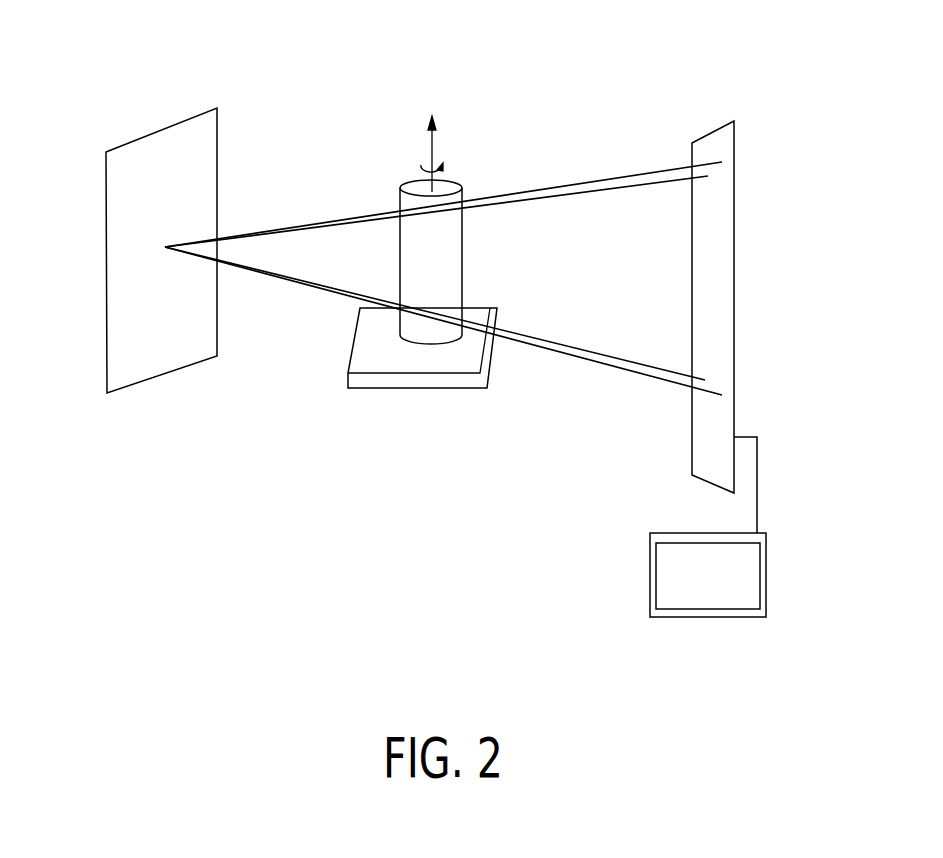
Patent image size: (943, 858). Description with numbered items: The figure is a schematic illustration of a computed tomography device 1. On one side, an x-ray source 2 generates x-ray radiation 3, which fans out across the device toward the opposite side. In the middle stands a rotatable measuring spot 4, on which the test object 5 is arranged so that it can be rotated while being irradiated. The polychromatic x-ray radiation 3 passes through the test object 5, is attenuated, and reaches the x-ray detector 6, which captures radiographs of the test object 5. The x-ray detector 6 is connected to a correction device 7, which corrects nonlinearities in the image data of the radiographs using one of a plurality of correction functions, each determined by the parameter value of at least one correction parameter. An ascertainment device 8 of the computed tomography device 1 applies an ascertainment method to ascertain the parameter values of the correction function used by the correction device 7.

The computed tomography device 1 is at (110, 73).
The x-ray source 2 is at (106, 312).
The x-ray radiation 3 is at (592, 233).
The rotatable measuring spot 4 is at (457, 360).
The test object 5 is at (465, 232).
The x-ray detector 6 is at (703, 435).
The correction device 7 is at (650, 575).
The ascertainment device 8 is at (757, 595).